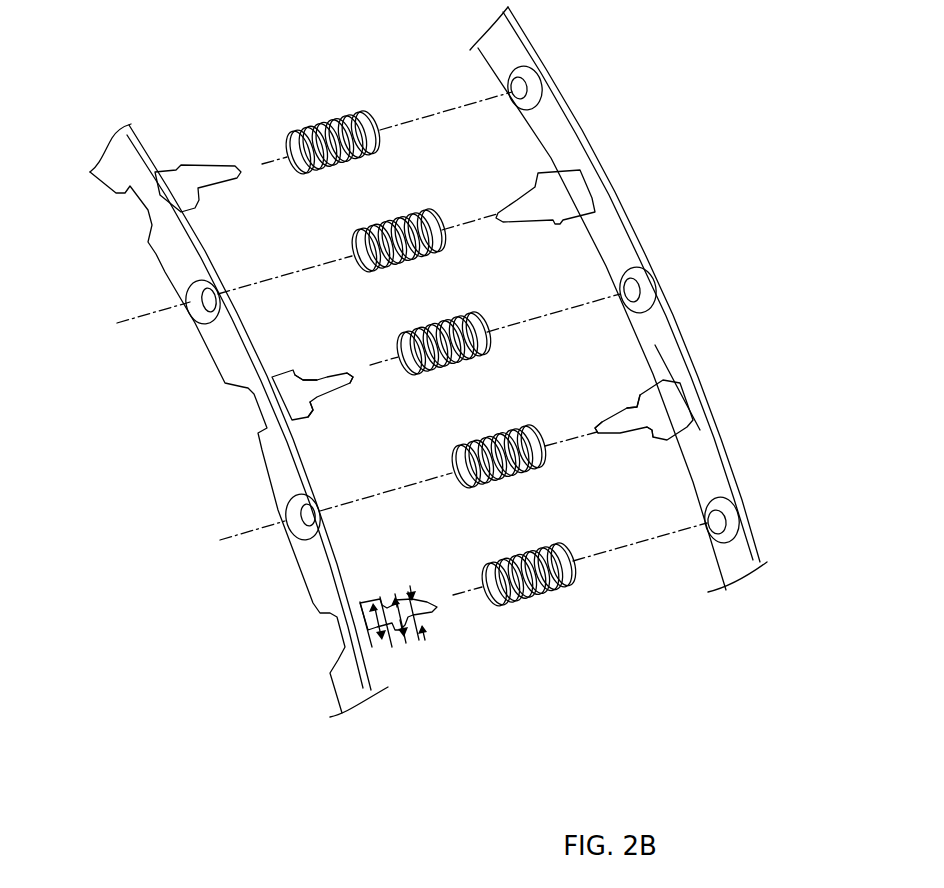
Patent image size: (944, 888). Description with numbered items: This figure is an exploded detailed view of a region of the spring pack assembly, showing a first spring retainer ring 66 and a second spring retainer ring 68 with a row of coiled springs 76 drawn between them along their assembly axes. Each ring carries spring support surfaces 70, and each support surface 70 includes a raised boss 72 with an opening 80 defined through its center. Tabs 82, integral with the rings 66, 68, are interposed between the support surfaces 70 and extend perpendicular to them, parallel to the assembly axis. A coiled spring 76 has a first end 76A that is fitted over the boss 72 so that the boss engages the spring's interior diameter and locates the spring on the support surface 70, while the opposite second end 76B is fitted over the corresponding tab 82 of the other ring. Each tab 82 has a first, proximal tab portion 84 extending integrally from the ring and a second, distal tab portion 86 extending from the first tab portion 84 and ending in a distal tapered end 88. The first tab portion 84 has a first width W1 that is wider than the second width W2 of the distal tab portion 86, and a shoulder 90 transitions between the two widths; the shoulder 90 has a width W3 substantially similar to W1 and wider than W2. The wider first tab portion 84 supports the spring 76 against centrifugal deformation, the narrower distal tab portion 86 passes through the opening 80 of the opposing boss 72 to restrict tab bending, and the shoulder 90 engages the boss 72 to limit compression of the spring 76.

The first spring retainer ring 66 is at (113, 162).
The second spring retainer ring 68 is at (486, 46).
The spring support surface 70 is at (663, 333).
The boss 72 is at (640, 278).
The coiled spring 76 is at (395, 319).
The first end of the coiled spring 76A is at (365, 118).
The second end of the coiled spring 76B is at (300, 128).
The opening 80 is at (193, 310).
The tab 82 is at (187, 192).
The first tab portion 84 is at (285, 393).
The second tab portion 86 is at (318, 384).
The distal tapered end 88 is at (350, 370).
The shoulder 90 is at (313, 410).
The first width W1 is at (377, 622).
The second width W2 is at (433, 640).
The shoulder width W3 is at (406, 595).